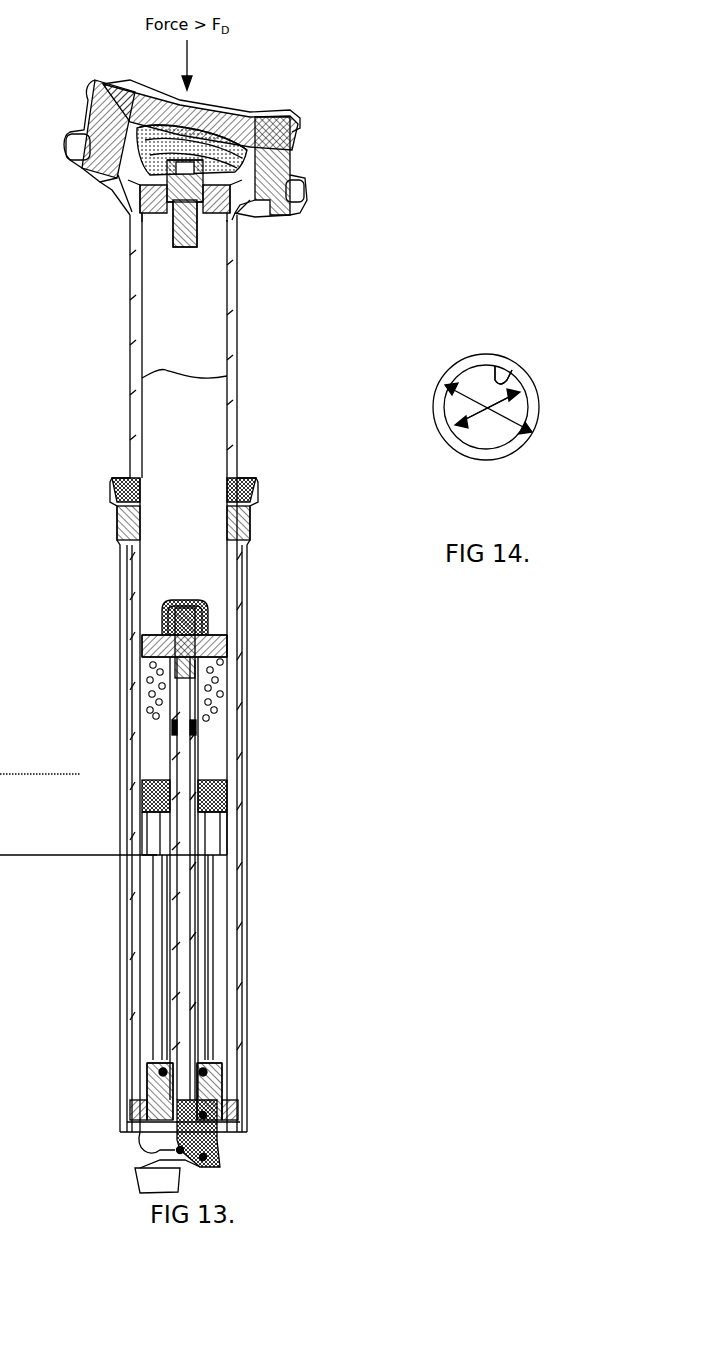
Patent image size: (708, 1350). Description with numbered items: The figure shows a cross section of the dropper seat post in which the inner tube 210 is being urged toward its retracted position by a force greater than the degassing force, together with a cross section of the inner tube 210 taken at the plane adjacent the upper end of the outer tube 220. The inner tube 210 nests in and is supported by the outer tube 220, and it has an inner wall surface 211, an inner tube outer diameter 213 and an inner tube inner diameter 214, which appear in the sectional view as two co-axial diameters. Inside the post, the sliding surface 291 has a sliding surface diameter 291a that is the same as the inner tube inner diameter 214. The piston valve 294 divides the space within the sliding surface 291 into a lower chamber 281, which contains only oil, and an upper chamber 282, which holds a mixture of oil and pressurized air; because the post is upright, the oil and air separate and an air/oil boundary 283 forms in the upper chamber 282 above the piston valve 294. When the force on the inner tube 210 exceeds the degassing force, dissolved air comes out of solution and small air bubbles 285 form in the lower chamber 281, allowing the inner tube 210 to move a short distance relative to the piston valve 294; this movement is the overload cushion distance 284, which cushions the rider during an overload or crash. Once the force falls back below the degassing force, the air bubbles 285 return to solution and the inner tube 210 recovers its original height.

In FIG. 13, the inner tube 210 is at (130, 400).
In FIG. 14, the inner wall surface 211 is at (496, 378).
In FIG. 14, the inner tube outer diameter 213 is at (467, 397).
In FIG. 13, the inner tube inner diameter 214 is at (34, 184).
In FIG. 14, the inner tube inner diameter 214 is at (473, 448).
In FIG. 13, the outer tube 220 is at (122, 977).
In FIG. 13, the lower chamber 281 is at (208, 762).
In FIG. 13, the upper chamber 282 is at (167, 468).
In FIG. 13, the air/oil boundary 283 is at (165, 372).
In FIG. 13, the overload cushion distance 284 is at (0, 826).
In FIG. 13, the air bubbles 285 is at (218, 680).
In FIG. 14, the sliding surface 291 is at (532, 323).
In FIG. 14, the sliding surface diameter 291a is at (517, 428).
In FIG. 13, the piston valve 294 is at (213, 635).